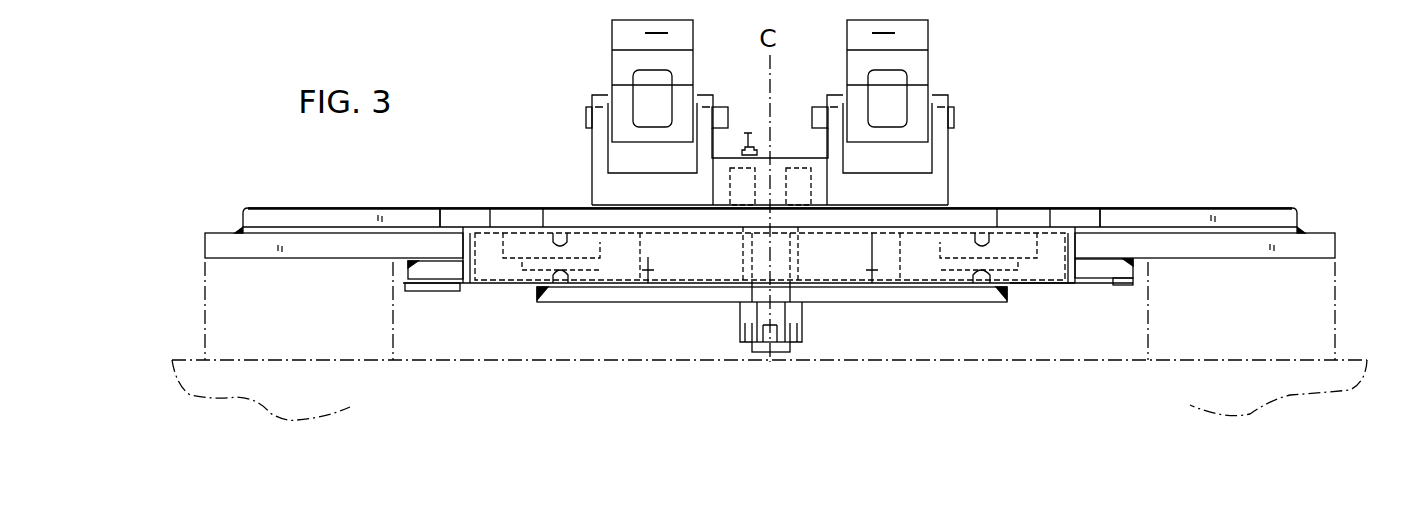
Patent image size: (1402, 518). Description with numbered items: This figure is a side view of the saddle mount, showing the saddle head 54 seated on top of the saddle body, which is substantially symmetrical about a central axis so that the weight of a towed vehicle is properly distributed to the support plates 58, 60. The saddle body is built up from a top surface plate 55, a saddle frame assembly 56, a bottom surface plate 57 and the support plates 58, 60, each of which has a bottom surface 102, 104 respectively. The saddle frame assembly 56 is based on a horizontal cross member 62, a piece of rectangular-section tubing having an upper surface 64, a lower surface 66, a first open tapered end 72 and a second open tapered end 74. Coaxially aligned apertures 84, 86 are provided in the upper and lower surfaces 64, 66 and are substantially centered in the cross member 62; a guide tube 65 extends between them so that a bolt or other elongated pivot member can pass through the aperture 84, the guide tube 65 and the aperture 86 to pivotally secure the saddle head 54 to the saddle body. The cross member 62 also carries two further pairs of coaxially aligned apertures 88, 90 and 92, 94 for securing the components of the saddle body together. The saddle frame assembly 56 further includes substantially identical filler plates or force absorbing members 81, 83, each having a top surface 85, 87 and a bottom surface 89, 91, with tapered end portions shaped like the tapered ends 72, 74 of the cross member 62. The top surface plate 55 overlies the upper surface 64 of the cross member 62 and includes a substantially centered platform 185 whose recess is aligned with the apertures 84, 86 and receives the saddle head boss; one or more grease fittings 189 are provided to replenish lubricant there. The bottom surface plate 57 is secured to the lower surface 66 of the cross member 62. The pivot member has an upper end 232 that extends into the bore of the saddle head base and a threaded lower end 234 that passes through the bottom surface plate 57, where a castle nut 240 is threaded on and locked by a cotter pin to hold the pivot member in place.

The saddle head 54 is at (928, 63).
The top surface plate 55 is at (469, 207).
The saddle frame assembly 56 is at (1043, 289).
The bottom surface plate 57 is at (648, 299).
The support plate 58 is at (209, 246).
The support plate 60 is at (1338, 236).
The horizontal cross member 62 is at (512, 288).
The upper surface 64 is at (933, 243).
The guide tube 65 is at (742, 257).
The lower surface 66 is at (1015, 288).
The first open tapered end 72 is at (470, 270).
The second open tapered end 74 is at (1077, 260).
The filler plate/force absorbing member 81 is at (427, 272).
The filler plate/force absorbing member 83 is at (1135, 272).
The aperture 84 is at (817, 290).
The top surface 85 is at (435, 258).
The aperture 86 is at (808, 205).
The top surface 87 is at (1100, 258).
The aperture 88 is at (558, 230).
The bottom surface 89 is at (457, 290).
The aperture 90 is at (563, 290).
The bottom surface 91 is at (1115, 286).
The aperture 92 is at (982, 230).
The aperture 94 is at (982, 288).
The bottom surface 102 is at (300, 261).
The bottom surface 104 is at (1252, 259).
The platform 185 is at (924, 204).
The grease fitting 189 is at (748, 132).
The upper end 232 is at (730, 189).
The threaded lower end 234 is at (782, 352).
The castle nut 240 is at (748, 312).